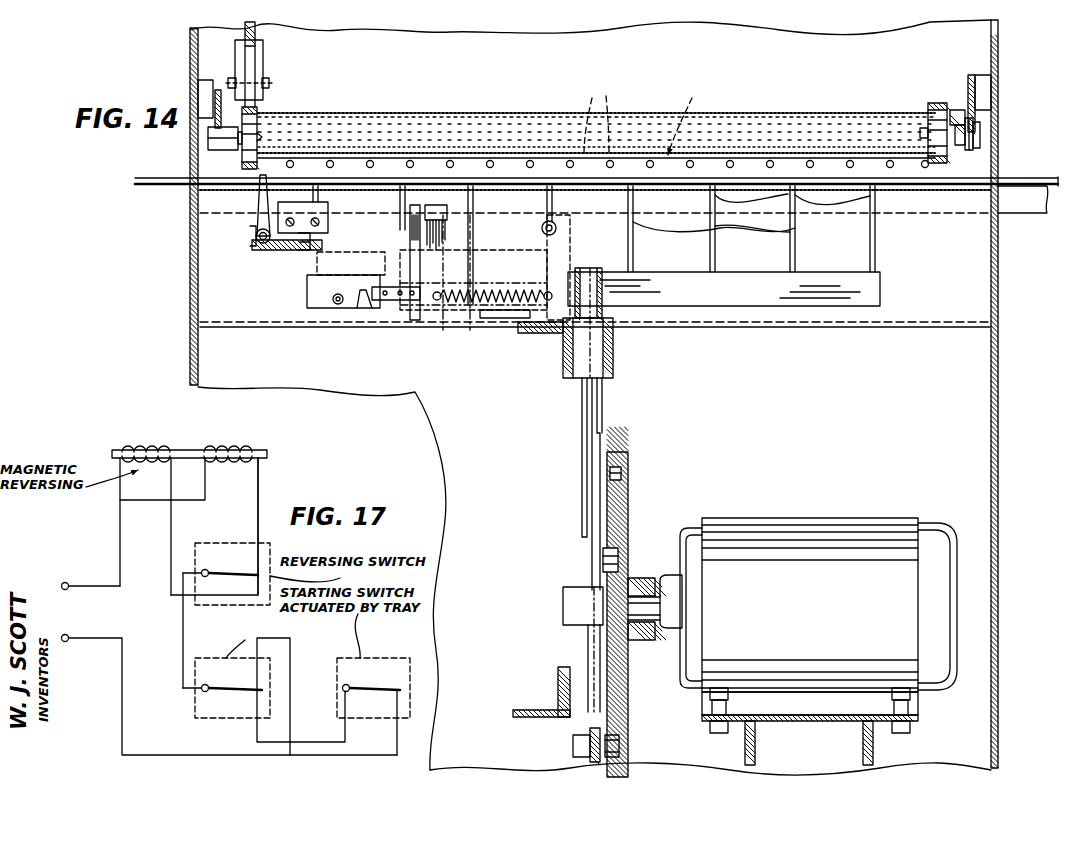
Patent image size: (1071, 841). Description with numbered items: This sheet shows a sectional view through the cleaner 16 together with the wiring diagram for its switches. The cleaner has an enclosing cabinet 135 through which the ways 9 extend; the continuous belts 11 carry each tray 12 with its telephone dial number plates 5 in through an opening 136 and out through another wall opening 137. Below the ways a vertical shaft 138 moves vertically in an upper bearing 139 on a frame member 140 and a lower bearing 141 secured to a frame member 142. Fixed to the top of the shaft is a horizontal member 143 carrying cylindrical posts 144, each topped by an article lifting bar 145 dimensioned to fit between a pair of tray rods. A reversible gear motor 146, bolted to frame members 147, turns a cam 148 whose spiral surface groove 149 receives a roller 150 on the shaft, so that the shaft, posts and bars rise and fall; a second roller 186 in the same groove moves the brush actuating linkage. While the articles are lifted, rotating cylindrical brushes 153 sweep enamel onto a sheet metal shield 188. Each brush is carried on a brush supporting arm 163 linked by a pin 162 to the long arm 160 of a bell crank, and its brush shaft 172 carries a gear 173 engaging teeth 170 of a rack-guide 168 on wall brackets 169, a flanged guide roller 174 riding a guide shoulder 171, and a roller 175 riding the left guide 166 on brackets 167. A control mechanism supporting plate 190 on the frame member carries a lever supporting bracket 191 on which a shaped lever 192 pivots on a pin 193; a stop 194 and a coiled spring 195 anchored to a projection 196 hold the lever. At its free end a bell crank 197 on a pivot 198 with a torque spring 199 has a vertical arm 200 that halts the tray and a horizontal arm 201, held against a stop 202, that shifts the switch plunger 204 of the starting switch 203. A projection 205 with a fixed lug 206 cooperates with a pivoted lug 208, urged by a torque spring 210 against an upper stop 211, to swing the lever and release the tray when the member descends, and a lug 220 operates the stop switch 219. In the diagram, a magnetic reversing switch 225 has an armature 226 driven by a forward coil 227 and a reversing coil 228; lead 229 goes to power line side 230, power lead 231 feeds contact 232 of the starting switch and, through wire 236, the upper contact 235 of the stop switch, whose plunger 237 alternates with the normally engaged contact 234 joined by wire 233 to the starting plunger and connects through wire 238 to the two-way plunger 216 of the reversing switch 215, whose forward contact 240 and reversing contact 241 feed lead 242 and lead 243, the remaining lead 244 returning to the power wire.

In FIG. 14, the telephone dial number plate 5 is at (596, 117).
In FIG. 14, the way 9 is at (1010, 214).
In FIG. 14, the continuous belt 11 is at (938, 180).
In FIG. 14, the tray 12 is at (687, 115).
In FIG. 14, the cleaner 16 is at (188, 278).
In FIG. 14, the enclosing cabinet 135 is at (990, 438).
In FIG. 14, the opening 136 is at (1018, 152).
In FIG. 14, the wall opening 137 is at (190, 160).
In FIG. 14, the vertical shaft 138 is at (600, 412).
In FIG. 14, the upper bearing 139 is at (614, 358).
In FIG. 14, the frame member 140 is at (563, 357).
In FIG. 14, the lower bearing 141 is at (577, 590).
In FIG. 14, the frame member 142 is at (524, 712).
In FIG. 14, the horizontal member 143 is at (763, 300).
In FIG. 14, the cylindrical post 144 is at (720, 236).
In FIG. 14, the article lifting bar 145 is at (790, 192).
In FIG. 14, the reversible gear motor 146 is at (928, 528).
In FIG. 14, the frame member 147 is at (866, 742).
In FIG. 14, the cam 148 is at (623, 500).
In FIG. 14, the surface groove 149 is at (621, 470).
In FIG. 14, the roller 150 is at (614, 552).
In FIG. 14, the rotating cylindrical brush 153 is at (477, 112).
In FIG. 14, the long arm 160 is at (256, 62).
In FIG. 14, the pin 162 is at (268, 83).
In FIG. 14, the brush supporting arm 163 is at (232, 139).
In FIG. 14, the left guide 166 is at (218, 92).
In FIG. 14, the bracket 167 is at (204, 88).
In FIG. 14, the rack-guide 168 is at (971, 76).
In FIG. 14, the wall bracket 169 is at (984, 84).
In FIG. 14, the teeth 170 is at (929, 130).
In FIG. 14, the guide shoulder 171 is at (976, 125).
In FIG. 14, the brush shaft 172 is at (259, 136).
In FIG. 14, the gear 173 is at (978, 150).
In FIG. 14, the flanged guide roller 174 is at (973, 140).
In FIG. 14, the roller 175 is at (208, 140).
In FIG. 14, the roller 186 is at (616, 738).
In FIG. 14, the sheet metal shield 188 is at (930, 305).
In FIG. 14, the control mechanism supporting plate 190 is at (502, 334).
In FIG. 14, the lever supporting bracket 191 is at (566, 262).
In FIG. 14, the shaped lever 192 is at (480, 222).
In FIG. 14, the pin 193 is at (550, 222).
In FIG. 14, the stop 194 is at (428, 268).
In FIG. 14, the coiled spring 195 is at (465, 320).
In FIG. 14, the projection 196 is at (590, 288).
In FIG. 14, the bell crank 197 is at (252, 238).
In FIG. 14, the pivot 198 is at (254, 232).
In FIG. 14, the torque spring 199 is at (256, 250).
In FIG. 14, the vertical arm 200 is at (258, 210).
In FIG. 14, the horizontal arm 201 is at (289, 250).
In FIG. 14, the stop 202 is at (313, 250).
In FIG. 14, the starting switch 203 is at (314, 214).
In FIG. 17, the starting switch 203 is at (377, 666).
In FIG. 14, the switch plunger 204 is at (318, 225).
In FIG. 17, the switch plunger 204 is at (370, 688).
In FIG. 14, the projection 205 is at (383, 264).
In FIG. 14, the fixed lug 206 is at (372, 310).
In FIG. 14, the pivoted lug 208 is at (348, 310).
In FIG. 14, the torque spring 210 is at (333, 298).
In FIG. 14, the upper stop 211 is at (362, 313).
In FIG. 17, the reversing switch 215 is at (311, 574).
In FIG. 17, the two-way plunger 216 is at (222, 566).
In FIG. 14, the stop switch 219 is at (505, 310).
In FIG. 17, the stop switch 219 is at (262, 671).
In FIG. 14, the lug 220 is at (520, 273).
In FIG. 17, the magnetic reversing switch 225 is at (133, 478).
In FIG. 17, the armature 226 is at (188, 452).
In FIG. 17, the forward coil 227 is at (146, 448).
In FIG. 17, the reversing coil 228 is at (238, 447).
In FIG. 17, the lead 229 is at (112, 463).
In FIG. 17, the power line side 230 is at (120, 550).
In FIG. 17, the power lead 231 is at (230, 695).
In FIG. 17, the contact 232 is at (396, 694).
In FIG. 17, the wire 233 is at (308, 755).
In FIG. 17, the normally engaged contact 234 is at (258, 694).
In FIG. 17, the upper contact 235 is at (258, 678).
In FIG. 17, the wire 236 is at (292, 655).
In FIG. 17, the plunger 237 is at (237, 690).
In FIG. 17, the wire 238 is at (182, 618).
In FIG. 17, the forward contact 240 is at (257, 580).
In FIG. 17, the reversing contact 241 is at (256, 564).
In FIG. 17, the lead 242 is at (172, 532).
In FIG. 17, the lead 243 is at (260, 498).
In FIG. 17, the lead 244 is at (206, 506).